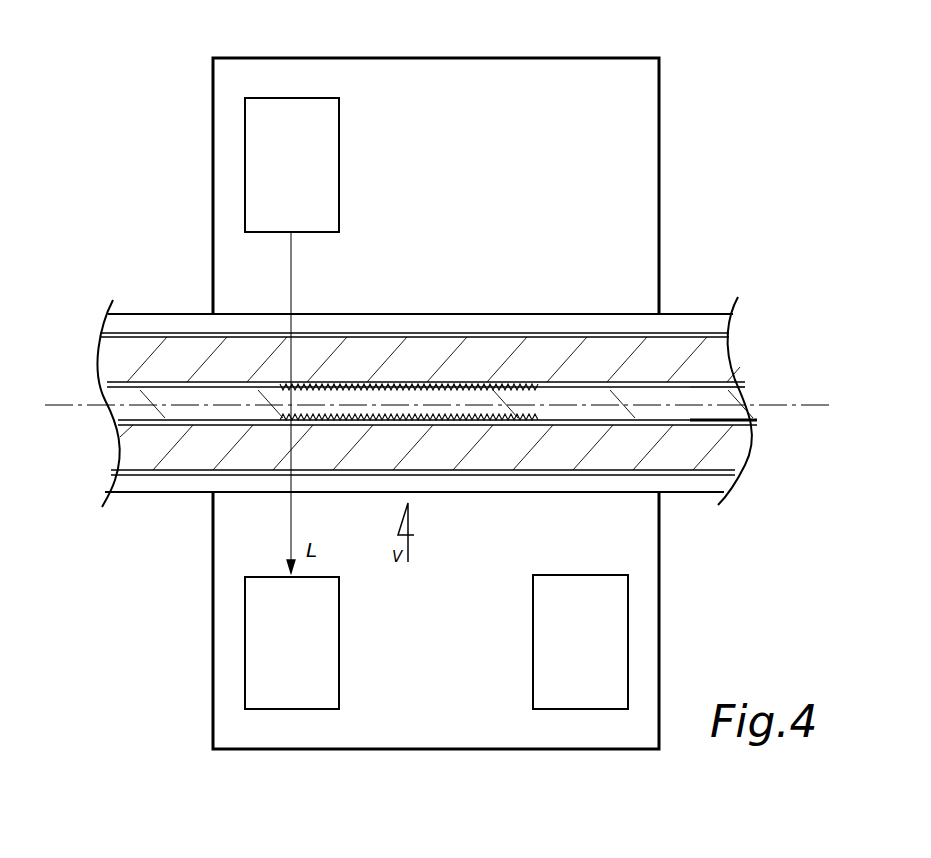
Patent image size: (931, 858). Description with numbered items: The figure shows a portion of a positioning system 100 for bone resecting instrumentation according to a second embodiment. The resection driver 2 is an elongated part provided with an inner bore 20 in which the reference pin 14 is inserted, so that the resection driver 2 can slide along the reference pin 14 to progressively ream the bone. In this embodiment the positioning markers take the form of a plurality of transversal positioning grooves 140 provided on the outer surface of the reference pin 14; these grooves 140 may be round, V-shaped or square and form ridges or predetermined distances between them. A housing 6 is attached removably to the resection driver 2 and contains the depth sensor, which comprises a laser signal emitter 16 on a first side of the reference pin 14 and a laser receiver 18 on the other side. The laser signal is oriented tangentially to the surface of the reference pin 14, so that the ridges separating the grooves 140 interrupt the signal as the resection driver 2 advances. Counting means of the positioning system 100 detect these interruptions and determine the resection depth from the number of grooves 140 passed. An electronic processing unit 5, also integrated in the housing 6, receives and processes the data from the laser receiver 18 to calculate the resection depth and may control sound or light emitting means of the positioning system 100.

The housing 6 is at (538, 58).
The laser signal emitter 16 is at (292, 165).
The laser receiver 18 is at (292, 643).
The electronic processing unit 5 is at (580, 642).
The resection driver 2 is at (148, 320).
The reference pin 14 is at (712, 400).
The transversal positioning grooves 140 is at (428, 382).
The inner bore 20 is at (758, 422).
The positioning system 100 is at (178, 582).